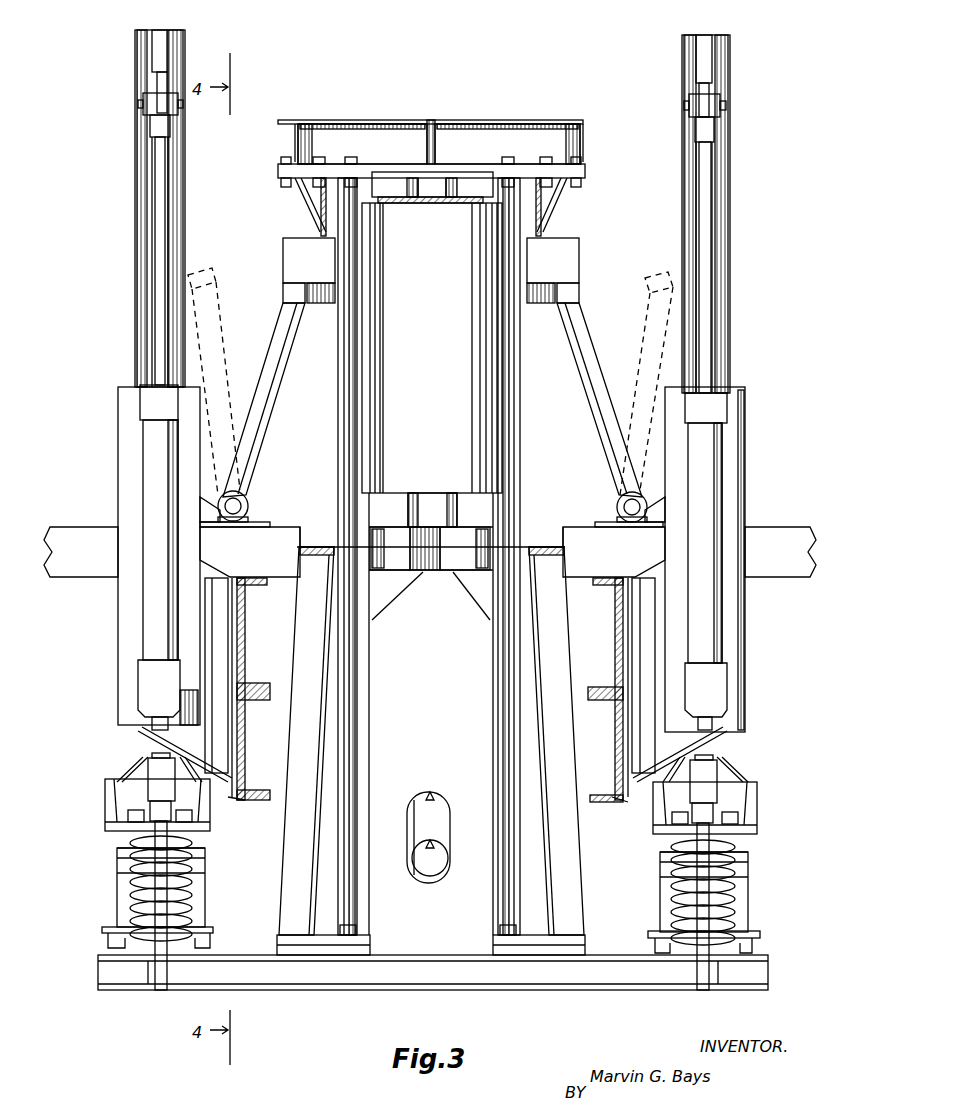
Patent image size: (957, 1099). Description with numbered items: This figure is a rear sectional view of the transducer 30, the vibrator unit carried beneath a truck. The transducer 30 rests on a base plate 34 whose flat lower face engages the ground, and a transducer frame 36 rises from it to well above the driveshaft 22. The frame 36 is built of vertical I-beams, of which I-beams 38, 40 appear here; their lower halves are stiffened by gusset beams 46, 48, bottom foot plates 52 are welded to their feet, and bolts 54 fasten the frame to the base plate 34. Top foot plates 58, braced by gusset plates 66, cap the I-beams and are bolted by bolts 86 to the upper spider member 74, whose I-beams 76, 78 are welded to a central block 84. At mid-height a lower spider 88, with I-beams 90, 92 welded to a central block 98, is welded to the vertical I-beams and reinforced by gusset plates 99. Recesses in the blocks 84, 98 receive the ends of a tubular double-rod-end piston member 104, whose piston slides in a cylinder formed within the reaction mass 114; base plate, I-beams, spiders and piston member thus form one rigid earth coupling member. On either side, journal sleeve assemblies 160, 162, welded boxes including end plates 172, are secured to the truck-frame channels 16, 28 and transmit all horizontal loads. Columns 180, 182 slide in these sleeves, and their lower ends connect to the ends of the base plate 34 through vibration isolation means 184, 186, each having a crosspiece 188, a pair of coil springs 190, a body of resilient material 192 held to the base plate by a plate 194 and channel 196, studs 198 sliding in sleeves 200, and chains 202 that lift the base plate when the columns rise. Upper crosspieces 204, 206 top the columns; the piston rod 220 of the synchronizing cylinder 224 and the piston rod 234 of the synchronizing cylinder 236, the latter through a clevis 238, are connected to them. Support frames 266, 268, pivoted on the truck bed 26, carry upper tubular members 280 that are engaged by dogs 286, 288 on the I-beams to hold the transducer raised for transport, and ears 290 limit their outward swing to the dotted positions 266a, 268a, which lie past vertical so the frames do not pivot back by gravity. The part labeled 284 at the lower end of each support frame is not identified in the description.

The transducer 30 is at (98, 30).
The base plate 34 is at (515, 978).
The transducer frame 36 is at (377, 714).
The I-beam 38 is at (357, 768).
The I-beam 40 is at (505, 768).
The gusset beam 46 is at (285, 872).
The gusset beam 48 is at (577, 872).
The bottom foot plates 52 is at (278, 945).
The bolts 54 is at (348, 925).
The driveshaft 22 is at (428, 878).
The bed 26 is at (80, 535).
The channel 28 is at (244, 650).
The channel 16 is at (255, 790).
The end plate 172 is at (240, 795).
The top foot plates 58 is at (278, 172).
The gusset plates 66 is at (310, 198).
The upper spider member 74 is at (339, 108).
The I-beam 76 is at (365, 138).
The I-beam 78 is at (510, 135).
The central block 84 is at (431, 135).
The bolts 86 is at (352, 157).
The lower spider 88 is at (436, 584).
The I-beam 90 is at (395, 545).
The I-beam 92 is at (466, 545).
The central block 98 is at (420, 573).
The gusset plates 99 is at (388, 605).
The tubular double-rod-end piston member 104 is at (432, 185).
The reaction mass 114 is at (432, 345).
The journal sleeve assembly 160 is at (122, 632).
The journal sleeve assembly 162 is at (738, 627).
The column 180 is at (140, 308).
The column 182 is at (730, 322).
The vibration isolation means 184 is at (110, 871).
The vibration isolation means 186 is at (766, 871).
The crosspiece 188 is at (125, 797).
The coil springs 190 is at (135, 912).
The body of resilient material 192 is at (117, 893).
The plate 194 is at (760, 935).
The channel 196 is at (752, 950).
The studs 198 is at (140, 753).
The sleeves 200 is at (148, 775).
The chains 202 is at (138, 840).
The upper crosspiece 204 is at (152, 64).
The upper crosspiece 206 is at (712, 68).
The piston rod 220 is at (165, 235).
The synchronizing cylinder 224 is at (150, 605).
The piston rod 234 is at (713, 258).
The synchronizing cylinder 236 is at (716, 509).
The clevis 238 is at (726, 106).
The support frame 266 is at (297, 347).
The dotted outline 266a is at (212, 268).
The support frame 268 is at (606, 341).
The dotted outline 268a is at (668, 272).
The upper tubular member 280 is at (283, 292).
The pivot pin 284 is at (247, 504).
The dogs 286 is at (283, 264).
The dogs 288 is at (579, 255).
The ears 290 is at (215, 522).